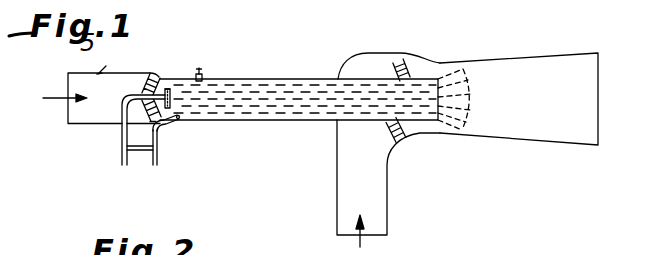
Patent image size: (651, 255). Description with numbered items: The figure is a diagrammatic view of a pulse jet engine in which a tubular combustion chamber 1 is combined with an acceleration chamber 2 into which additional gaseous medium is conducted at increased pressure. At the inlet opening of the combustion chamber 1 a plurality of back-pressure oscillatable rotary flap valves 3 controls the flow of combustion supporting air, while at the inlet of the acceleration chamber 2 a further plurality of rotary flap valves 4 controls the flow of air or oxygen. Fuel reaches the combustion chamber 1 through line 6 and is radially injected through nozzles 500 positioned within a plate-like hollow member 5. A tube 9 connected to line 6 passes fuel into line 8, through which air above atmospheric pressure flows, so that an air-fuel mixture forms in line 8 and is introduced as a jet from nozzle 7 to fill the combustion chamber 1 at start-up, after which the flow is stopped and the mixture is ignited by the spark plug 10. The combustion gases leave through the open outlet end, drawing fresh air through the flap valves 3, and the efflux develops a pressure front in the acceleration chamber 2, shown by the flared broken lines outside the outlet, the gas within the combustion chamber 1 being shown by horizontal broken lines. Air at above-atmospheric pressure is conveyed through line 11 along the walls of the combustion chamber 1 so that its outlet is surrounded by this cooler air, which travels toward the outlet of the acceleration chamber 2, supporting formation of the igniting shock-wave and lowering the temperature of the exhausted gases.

The tubular combustion chamber 1 is at (299, 90).
The acceleration chamber 2 is at (543, 57).
The back-pressure oscillatable rotary flap valves 3 is at (148, 75).
The back-pressure oscillatable rotary flap valves 4 is at (394, 63).
The plate-like hollow member 5 is at (173, 90).
The nozzles 500 is at (167, 89).
The line 6 is at (122, 156).
The nozzle 7 is at (179, 120).
The line 8 is at (157, 155).
The tube 9 is at (143, 150).
The spark plug 10 is at (203, 71).
The line 11 is at (337, 193).